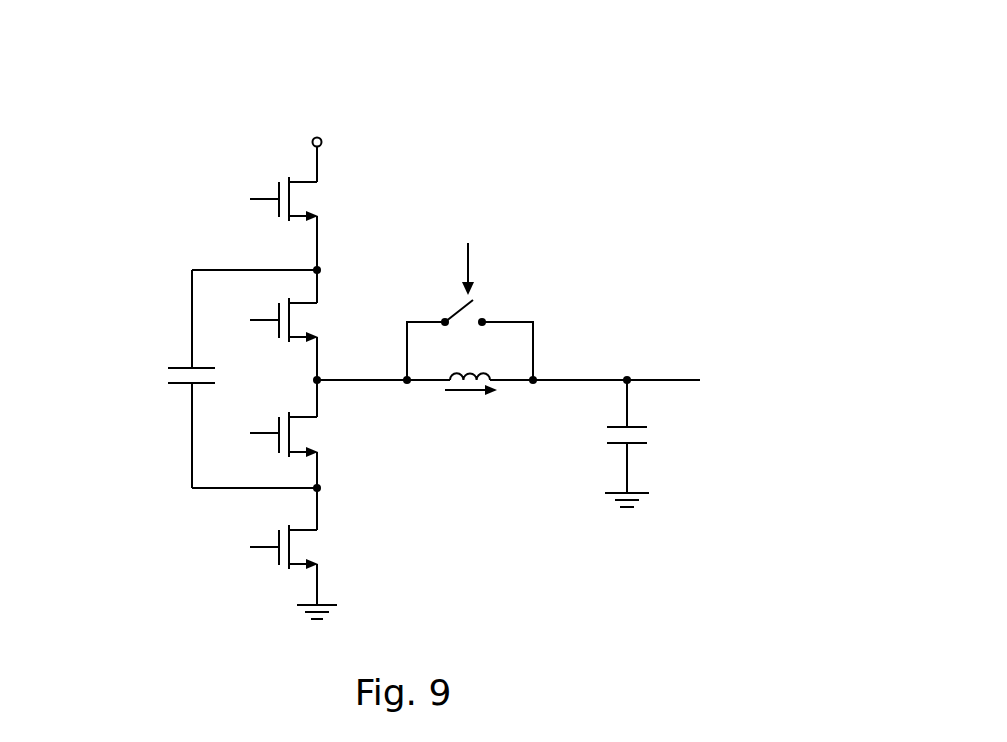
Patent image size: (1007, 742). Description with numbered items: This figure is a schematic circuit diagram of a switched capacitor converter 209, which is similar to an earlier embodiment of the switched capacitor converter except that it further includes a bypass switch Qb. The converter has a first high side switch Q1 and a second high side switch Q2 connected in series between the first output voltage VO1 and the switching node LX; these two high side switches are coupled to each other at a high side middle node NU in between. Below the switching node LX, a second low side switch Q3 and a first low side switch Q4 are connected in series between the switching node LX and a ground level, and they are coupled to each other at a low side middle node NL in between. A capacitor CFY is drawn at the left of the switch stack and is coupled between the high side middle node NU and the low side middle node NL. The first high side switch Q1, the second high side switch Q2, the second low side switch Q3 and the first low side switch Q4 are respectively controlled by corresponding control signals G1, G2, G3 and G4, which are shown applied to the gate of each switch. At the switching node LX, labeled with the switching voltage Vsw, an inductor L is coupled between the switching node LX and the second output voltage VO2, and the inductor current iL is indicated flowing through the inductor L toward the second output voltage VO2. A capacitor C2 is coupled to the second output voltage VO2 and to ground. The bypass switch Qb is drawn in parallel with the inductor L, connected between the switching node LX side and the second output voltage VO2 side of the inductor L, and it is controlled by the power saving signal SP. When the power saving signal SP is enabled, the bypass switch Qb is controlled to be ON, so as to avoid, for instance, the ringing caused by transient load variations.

The switched capacitor converter 209 is at (132, 65).
The first output voltage VO1 is at (318, 146).
The first high side switch Q1 is at (321, 199).
The control signal G1 is at (244, 200).
The high side middle node NU is at (337, 259).
The second high side switch Q2 is at (321, 320).
The control signal G2 is at (245, 322).
The switching node LX is at (295, 377).
The second low side switch Q3 is at (321, 434).
The control signal G3 is at (245, 434).
The low side middle node NL is at (335, 491).
The first low side switch Q4 is at (321, 547).
The control signal G4 is at (245, 545).
The capacitor CFY is at (216, 379).
The switching voltage Vsw is at (383, 368).
The bypass switch Qb is at (467, 335).
The power saving signal SP is at (463, 255).
The inductor L is at (538, 364).
The inductor current iL is at (471, 403).
The second output voltage VO2 is at (661, 366).
The capacitor C2 is at (607, 443).